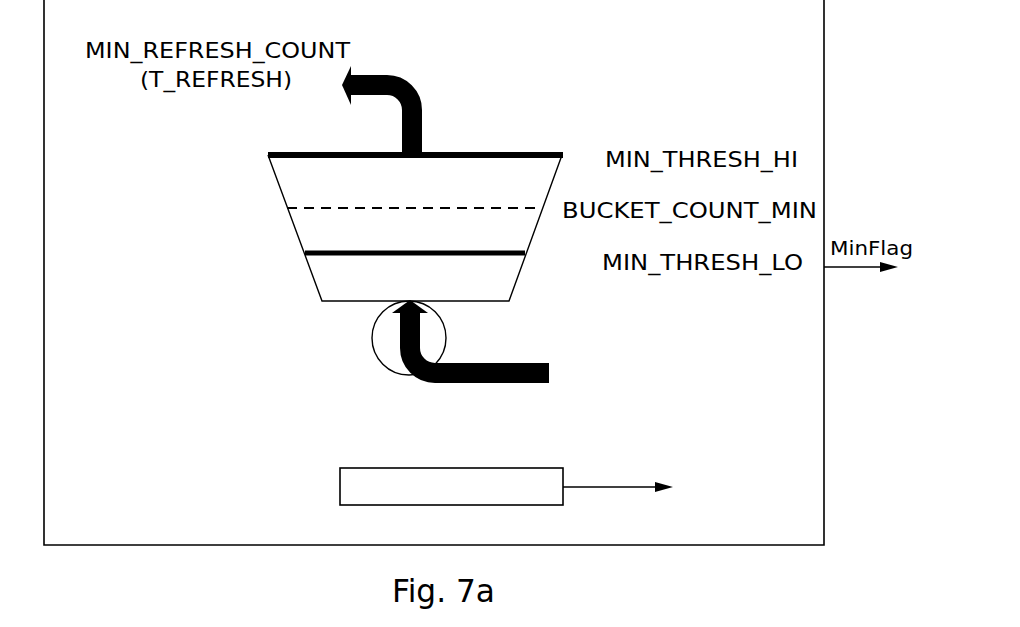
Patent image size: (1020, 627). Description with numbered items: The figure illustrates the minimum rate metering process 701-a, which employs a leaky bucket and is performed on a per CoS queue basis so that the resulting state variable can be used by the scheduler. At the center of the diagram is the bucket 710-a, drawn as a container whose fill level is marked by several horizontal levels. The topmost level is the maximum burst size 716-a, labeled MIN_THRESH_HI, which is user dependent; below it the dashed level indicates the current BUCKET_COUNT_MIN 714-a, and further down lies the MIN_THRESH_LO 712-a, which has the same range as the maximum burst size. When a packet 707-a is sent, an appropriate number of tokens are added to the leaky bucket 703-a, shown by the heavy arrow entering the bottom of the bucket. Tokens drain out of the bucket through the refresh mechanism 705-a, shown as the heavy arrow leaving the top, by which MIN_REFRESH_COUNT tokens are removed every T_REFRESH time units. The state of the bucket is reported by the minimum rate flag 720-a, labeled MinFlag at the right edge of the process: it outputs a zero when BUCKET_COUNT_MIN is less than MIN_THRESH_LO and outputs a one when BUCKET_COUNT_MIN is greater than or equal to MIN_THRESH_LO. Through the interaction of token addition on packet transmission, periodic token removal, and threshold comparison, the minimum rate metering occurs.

The minimum rate metering process 701-a is at (158, 508).
The token addition to leaky bucket 703-a is at (532, 385).
The token refresh removal 705-a is at (423, 108).
The packet 707-a is at (542, 496).
The bucket 710-a is at (306, 292).
The MIN_THRESH_LO 712-a is at (305, 253).
The BUCKET_COUNT_MIN 714-a is at (287, 209).
The maximum burst size (MIN_THRESH_HI) 716-a is at (268, 158).
The minimum rate flag 720-a is at (895, 328).